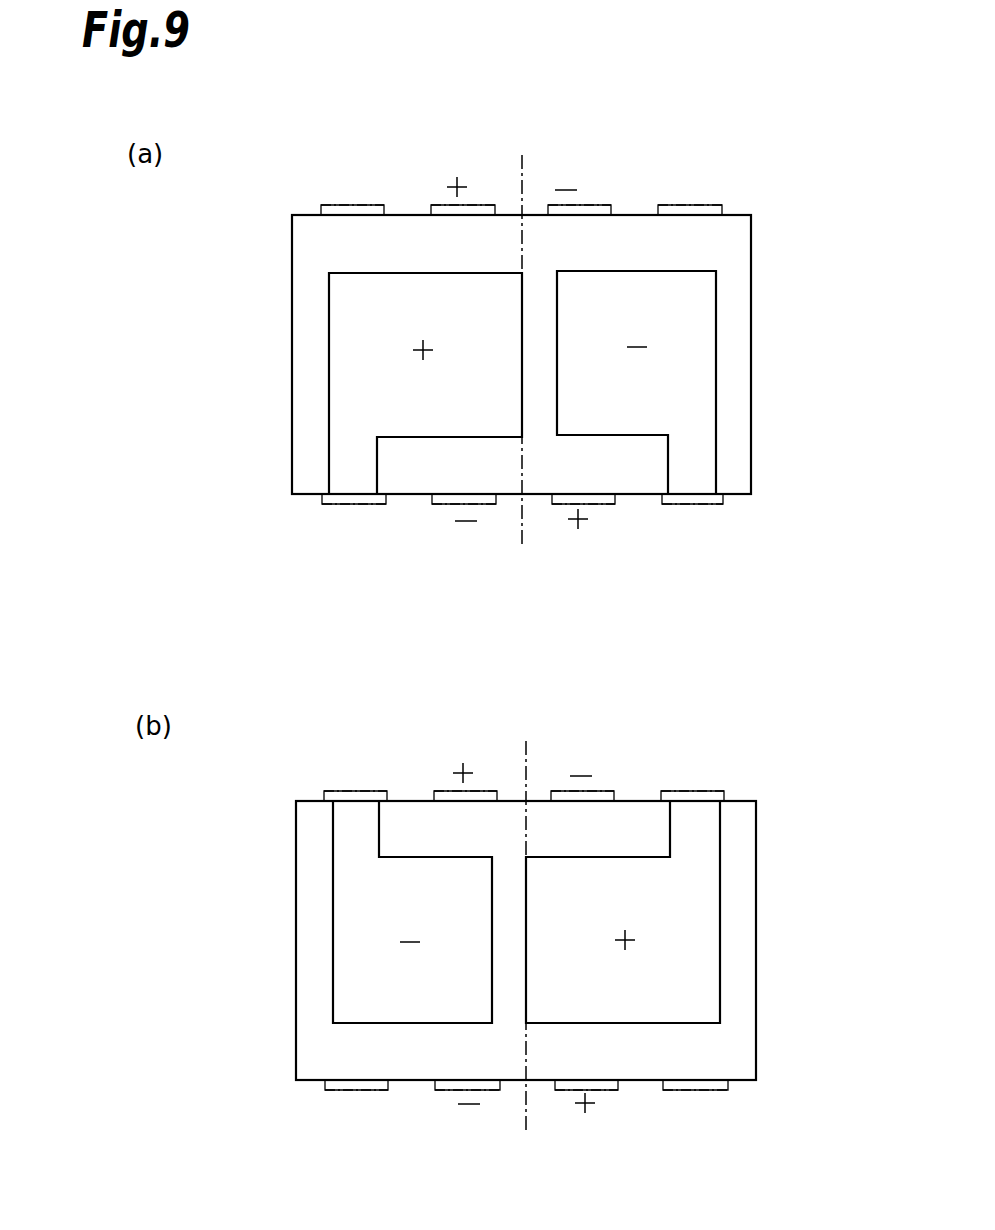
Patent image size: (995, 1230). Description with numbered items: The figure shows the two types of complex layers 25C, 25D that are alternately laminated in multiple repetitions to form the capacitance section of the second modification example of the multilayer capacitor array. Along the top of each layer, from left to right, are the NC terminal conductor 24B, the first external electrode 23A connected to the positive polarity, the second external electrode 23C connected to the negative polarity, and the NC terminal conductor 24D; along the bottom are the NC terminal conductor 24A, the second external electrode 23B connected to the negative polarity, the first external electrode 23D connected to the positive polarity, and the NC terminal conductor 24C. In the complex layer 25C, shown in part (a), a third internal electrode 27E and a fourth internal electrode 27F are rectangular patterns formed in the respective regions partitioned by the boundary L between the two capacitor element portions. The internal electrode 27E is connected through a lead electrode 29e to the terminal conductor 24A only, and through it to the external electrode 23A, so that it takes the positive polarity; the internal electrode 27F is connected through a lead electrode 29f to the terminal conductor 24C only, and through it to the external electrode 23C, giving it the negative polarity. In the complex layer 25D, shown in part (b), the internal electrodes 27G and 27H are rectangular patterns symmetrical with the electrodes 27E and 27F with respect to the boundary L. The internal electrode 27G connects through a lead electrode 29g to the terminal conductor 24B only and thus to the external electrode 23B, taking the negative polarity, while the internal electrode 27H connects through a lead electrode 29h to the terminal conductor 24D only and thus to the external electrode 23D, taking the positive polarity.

The complex layer 25C is at (806, 187).
The complex layer 25D is at (809, 774).
The first external electrode 23A is at (440, 206).
The second external electrode 23B is at (447, 505).
The second external electrode 23C is at (601, 206).
The first external electrode 23D is at (601, 505).
The first terminal conductor 24A is at (332, 505).
The second terminal conductor 24B is at (332, 206).
The second terminal conductor 24C is at (716, 505).
The first terminal conductor 24D is at (710, 206).
The third internal electrode 27E is at (346, 344).
The fourth internal electrode 27F is at (697, 342).
The fourth internal electrode 27G is at (353, 950).
The third internal electrode 27H is at (700, 950).
The lead electrode 29e is at (352, 469).
The lead electrode 29f is at (710, 461).
The lead electrode 29g is at (356, 828).
The lead electrode 29h is at (711, 821).
The boundary L is at (522, 530).